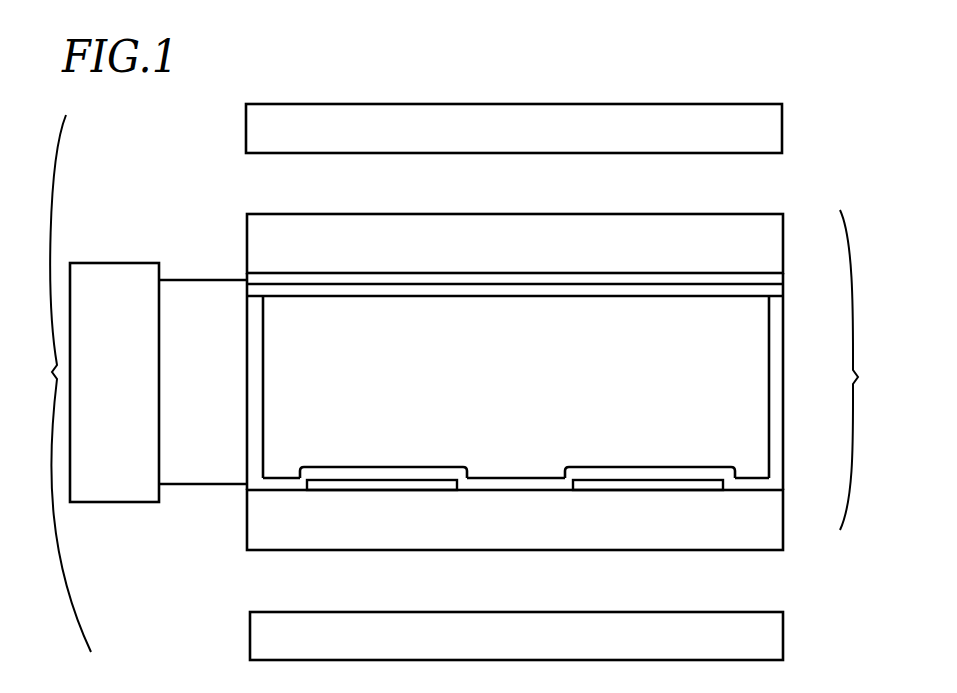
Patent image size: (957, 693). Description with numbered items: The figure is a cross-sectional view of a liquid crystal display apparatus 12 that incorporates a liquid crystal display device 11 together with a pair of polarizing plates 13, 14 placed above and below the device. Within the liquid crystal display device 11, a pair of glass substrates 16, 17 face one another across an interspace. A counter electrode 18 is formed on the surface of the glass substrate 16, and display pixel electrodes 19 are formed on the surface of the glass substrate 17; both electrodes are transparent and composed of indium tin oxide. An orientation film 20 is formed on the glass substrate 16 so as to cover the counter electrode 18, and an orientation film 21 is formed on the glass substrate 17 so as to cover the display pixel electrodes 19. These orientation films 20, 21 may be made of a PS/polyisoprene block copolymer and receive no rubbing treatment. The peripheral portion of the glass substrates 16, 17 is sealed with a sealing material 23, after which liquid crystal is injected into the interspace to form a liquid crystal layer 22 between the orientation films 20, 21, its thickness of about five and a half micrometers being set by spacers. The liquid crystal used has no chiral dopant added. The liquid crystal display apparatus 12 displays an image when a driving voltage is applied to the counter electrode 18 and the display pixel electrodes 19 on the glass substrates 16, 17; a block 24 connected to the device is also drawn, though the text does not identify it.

The liquid crystal display device 11 is at (866, 370).
The liquid crystal display apparatus 12 is at (55, 383).
The polarizing plate 13 is at (771, 125).
The polarizing plate 14 is at (771, 624).
The glass substrate 16 is at (771, 232).
The glass substrate 17 is at (771, 520).
The counter electrode 18 is at (772, 274).
The display pixel electrodes 19 is at (700, 482).
The orientation film 20 is at (772, 296).
The orientation film 21 is at (774, 483).
The liquid crystal layer 22 is at (745, 327).
The sealing material 23 is at (263, 380).
The driving circuit 24 is at (122, 263).